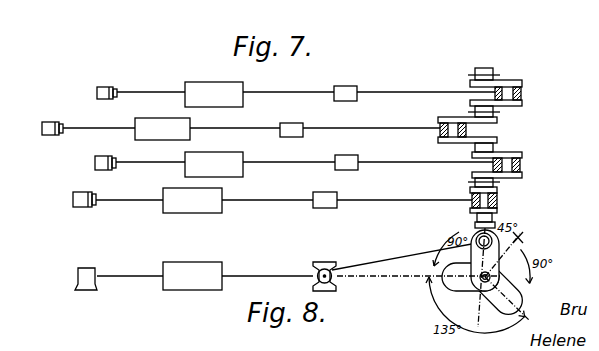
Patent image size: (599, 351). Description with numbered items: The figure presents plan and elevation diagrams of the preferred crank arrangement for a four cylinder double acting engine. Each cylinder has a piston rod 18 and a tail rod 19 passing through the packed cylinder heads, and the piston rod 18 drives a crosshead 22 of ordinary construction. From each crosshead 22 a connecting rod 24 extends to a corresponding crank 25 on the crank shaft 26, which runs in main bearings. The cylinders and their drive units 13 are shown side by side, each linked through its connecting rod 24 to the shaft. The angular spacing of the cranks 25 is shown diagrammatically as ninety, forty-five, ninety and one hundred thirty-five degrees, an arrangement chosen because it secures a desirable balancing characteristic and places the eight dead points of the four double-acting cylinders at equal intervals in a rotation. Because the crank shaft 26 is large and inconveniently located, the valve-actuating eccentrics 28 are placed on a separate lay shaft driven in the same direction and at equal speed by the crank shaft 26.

In FIG. 7, the motor / driving unit 13 is at (226, 83).
In FIG. 7, the piston rod 18 is at (292, 92).
In FIG. 7, the tail rod 19 is at (148, 91).
In FIG. 8, the tail rod 19 is at (137, 278).
In FIG. 7, the crosshead 22 is at (345, 88).
In FIG. 8, the crosshead 22 is at (340, 258).
In FIG. 7, the connecting rod 24 is at (405, 92).
In FIG. 7, the crank 25 is at (516, 80).
In FIG. 8, the crank 25 is at (523, 241).
In FIG. 7, the crank shaft 26 is at (488, 70).
In FIG. 8, the crank shaft 26 is at (500, 306).
In FIG. 7, the valve-actuating eccentrics 28 is at (476, 72).
In FIG. 8, the valve-actuating eccentrics 28 is at (485, 277).